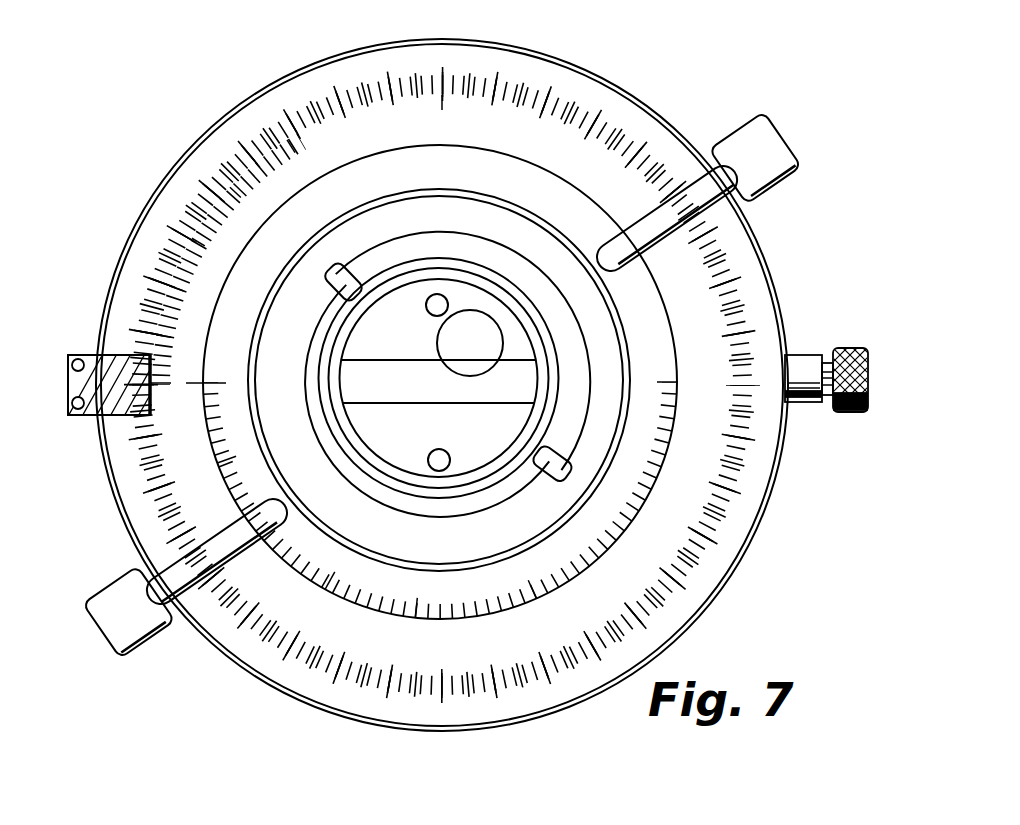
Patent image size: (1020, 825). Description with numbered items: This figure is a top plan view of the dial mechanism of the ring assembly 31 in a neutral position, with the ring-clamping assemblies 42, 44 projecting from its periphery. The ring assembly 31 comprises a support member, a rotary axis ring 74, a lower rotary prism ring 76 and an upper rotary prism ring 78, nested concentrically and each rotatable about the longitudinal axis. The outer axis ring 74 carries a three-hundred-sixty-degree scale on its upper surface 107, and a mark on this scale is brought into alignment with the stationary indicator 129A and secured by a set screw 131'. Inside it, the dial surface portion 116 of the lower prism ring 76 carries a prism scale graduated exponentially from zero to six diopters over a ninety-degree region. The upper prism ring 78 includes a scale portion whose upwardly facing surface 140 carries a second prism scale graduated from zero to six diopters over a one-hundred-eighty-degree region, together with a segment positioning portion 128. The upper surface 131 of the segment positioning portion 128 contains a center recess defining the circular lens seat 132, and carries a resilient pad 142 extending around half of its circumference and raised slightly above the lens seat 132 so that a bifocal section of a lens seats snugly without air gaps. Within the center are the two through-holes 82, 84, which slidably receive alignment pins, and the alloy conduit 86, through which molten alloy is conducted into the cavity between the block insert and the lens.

The ring assembly 31 is at (235, 97).
The ring-clamping assembly 42 is at (768, 133).
The ring-clamping assembly 44 is at (141, 632).
The rotary axis ring 74 is at (682, 630).
The lower rotary prism ring 76 is at (190, 247).
The upper rotary prism ring 78 is at (265, 250).
The through-hole 82 is at (448, 453).
The through-hole 84 is at (427, 308).
The alloy conduit 86 is at (453, 351).
The upper surface of axis ring 107 is at (143, 528).
The dial surface portion 116 is at (177, 415).
The segment positioning portion 128 is at (630, 346).
The stationary indicator 129A is at (106, 360).
The upper surface of segment positioning portion 131 is at (444, 297).
The knob 131' is at (840, 360).
The lens seat 132 is at (471, 507).
The upwardly facing surface of scale portion 140 is at (213, 450).
The resilient pad 142 is at (430, 243).